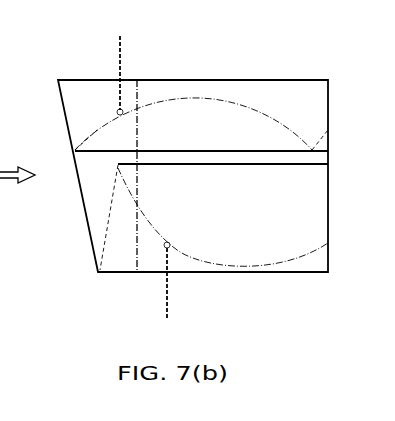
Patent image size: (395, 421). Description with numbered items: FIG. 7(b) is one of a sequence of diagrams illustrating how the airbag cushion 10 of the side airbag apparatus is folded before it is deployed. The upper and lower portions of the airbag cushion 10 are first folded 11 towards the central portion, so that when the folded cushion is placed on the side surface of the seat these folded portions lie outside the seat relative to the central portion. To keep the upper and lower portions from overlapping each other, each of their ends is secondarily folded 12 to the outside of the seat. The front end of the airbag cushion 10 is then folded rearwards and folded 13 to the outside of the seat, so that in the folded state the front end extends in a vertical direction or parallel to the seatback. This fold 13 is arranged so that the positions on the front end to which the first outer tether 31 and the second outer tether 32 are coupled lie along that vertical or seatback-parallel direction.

The airbag cushion 10 is at (298, 32).
The fold of upper and lower portions 11 is at (206, 175).
The secondary fold 12 is at (215, 162).
The front end fold 13 is at (139, 104).
The first outer tether 31 is at (117, 50).
The second outer tether 32 is at (163, 290).